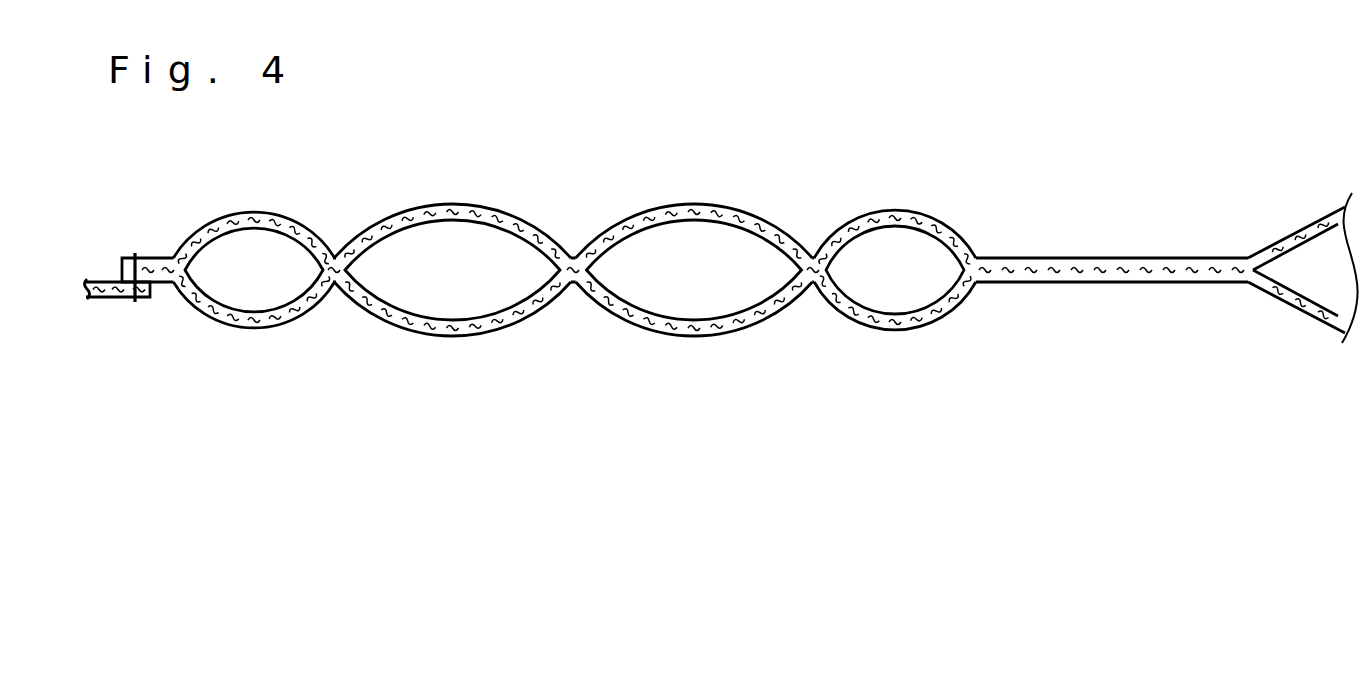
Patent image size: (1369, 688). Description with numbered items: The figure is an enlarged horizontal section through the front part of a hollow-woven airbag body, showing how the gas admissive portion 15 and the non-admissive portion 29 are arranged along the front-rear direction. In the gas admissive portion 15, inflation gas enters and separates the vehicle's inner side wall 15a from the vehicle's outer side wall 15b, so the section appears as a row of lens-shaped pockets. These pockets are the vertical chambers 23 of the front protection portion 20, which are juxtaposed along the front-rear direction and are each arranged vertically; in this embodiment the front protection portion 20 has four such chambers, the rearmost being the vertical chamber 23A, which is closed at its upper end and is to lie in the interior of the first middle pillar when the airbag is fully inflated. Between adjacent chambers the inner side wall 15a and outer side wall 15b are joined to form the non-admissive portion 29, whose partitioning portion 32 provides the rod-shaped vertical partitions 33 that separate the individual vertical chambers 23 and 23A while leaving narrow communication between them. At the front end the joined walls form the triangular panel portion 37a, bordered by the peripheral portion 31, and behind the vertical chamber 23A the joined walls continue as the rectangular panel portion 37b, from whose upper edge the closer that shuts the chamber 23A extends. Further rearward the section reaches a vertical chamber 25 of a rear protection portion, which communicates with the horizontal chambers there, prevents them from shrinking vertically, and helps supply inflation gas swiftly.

The gas admissive portion 15 is at (625, 247).
The vehicle's inner side wall 15a is at (945, 317).
The vehicle's outer side wall 15b is at (945, 220).
The front protection portion 20 is at (625, 265).
The vertical chamber 23 is at (250, 235).
The rearmost vertical chamber 23A is at (945, 247).
The vertical chamber 25 is at (1312, 217).
The non-admissive portion 29 is at (647, 274).
The peripheral portion 31 is at (152, 262).
The partitioning portion 32 is at (333, 263).
The vertical partition 33 is at (571, 203).
The triangular panel portion 37a is at (100, 297).
The rectangular panel portion 37b is at (1118, 267).